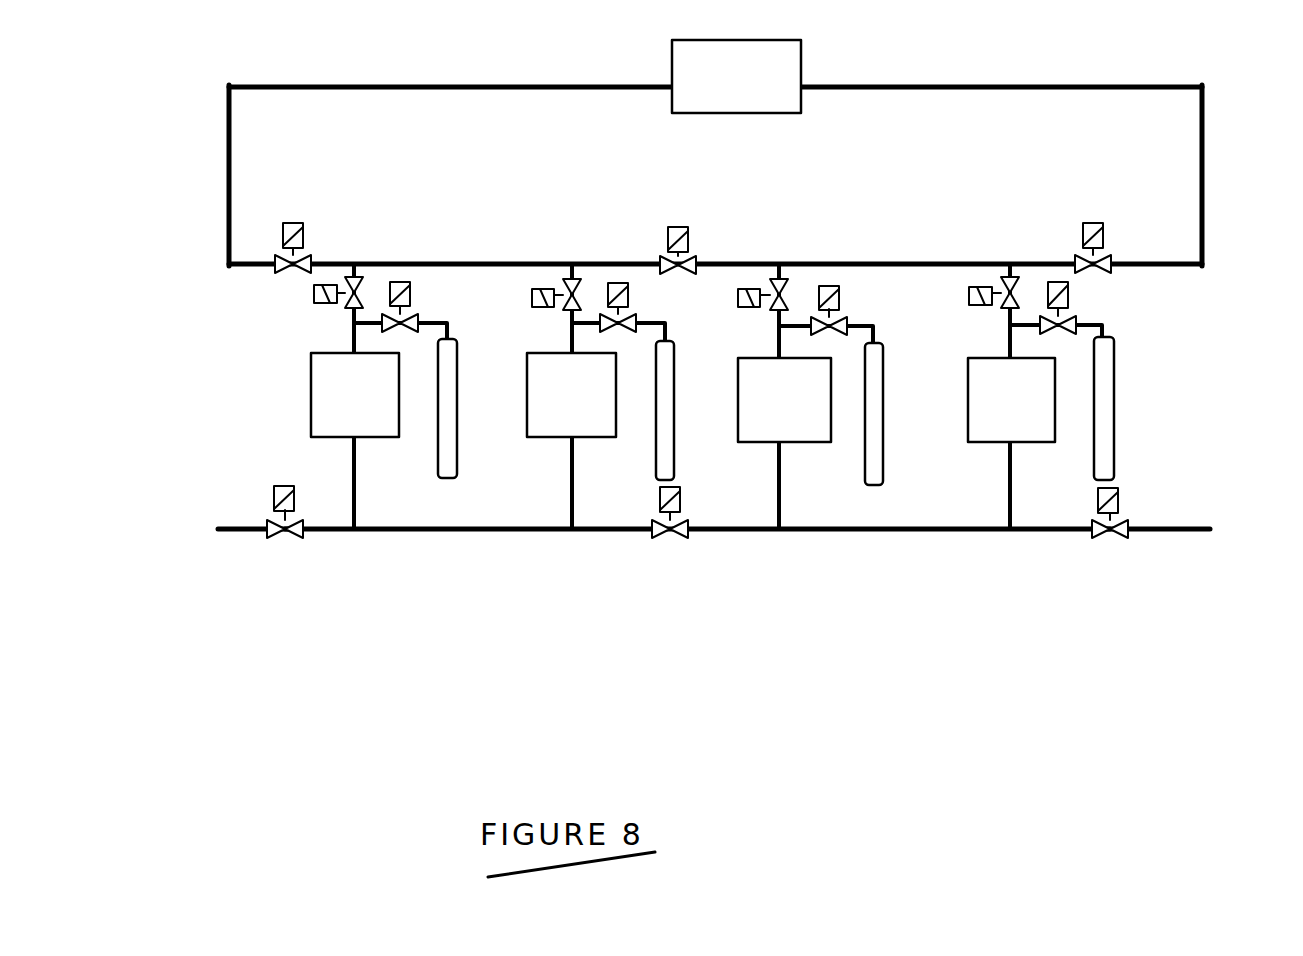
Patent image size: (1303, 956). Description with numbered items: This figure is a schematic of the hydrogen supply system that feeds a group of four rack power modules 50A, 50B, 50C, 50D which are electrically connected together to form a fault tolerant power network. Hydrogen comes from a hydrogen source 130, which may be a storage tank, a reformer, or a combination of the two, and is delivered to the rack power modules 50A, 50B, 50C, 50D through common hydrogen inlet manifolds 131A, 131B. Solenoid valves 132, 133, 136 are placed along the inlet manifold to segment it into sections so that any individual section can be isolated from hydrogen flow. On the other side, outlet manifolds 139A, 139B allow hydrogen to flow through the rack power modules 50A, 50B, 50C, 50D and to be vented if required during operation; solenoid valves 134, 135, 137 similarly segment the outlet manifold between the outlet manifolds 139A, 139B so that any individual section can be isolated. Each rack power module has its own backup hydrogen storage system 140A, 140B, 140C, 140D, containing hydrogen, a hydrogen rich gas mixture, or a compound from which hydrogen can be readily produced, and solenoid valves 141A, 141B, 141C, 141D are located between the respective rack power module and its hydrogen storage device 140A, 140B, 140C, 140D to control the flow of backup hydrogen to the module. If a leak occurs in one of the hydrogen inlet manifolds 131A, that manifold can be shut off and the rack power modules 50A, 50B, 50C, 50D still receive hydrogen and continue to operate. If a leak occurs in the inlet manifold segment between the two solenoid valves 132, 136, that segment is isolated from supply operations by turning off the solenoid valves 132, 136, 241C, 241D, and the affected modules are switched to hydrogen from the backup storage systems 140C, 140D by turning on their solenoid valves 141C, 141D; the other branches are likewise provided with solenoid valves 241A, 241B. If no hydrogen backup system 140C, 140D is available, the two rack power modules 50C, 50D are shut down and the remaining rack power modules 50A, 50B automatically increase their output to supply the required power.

The hydrogen source 130 is at (803, 45).
The hydrogen inlet manifold 131A is at (1204, 176).
The hydrogen inlet manifold 131B is at (225, 152).
The solenoid valve 132 is at (1080, 222).
The solenoid valve 133 is at (305, 232).
The solenoid valve 134 is at (1112, 545).
The solenoid valve 135 is at (280, 540).
The solenoid valve 136 is at (690, 228).
The solenoid valve 137 is at (668, 540).
The outlet manifold 139A is at (1192, 522).
The outlet manifold 139B is at (228, 515).
The solenoid valve 241A is at (312, 292).
The solenoid valve 241B is at (530, 305).
The solenoid valve 241C is at (742, 308).
The solenoid valve 241D is at (975, 306).
The solenoid valve 141A is at (412, 292).
The solenoid valve 141B is at (630, 296).
The solenoid valve 141C is at (840, 298).
The solenoid valve 141D is at (1070, 298).
The rack power module 50A is at (308, 377).
The rack power module 50B is at (524, 378).
The rack power module 50C is at (735, 380).
The rack power module 50D is at (965, 378).
The hydrogen storage system 140A is at (458, 458).
The hydrogen storage system 140B is at (676, 455).
The hydrogen storage system 140C is at (884, 455).
The hydrogen storage system 140D is at (1116, 442).